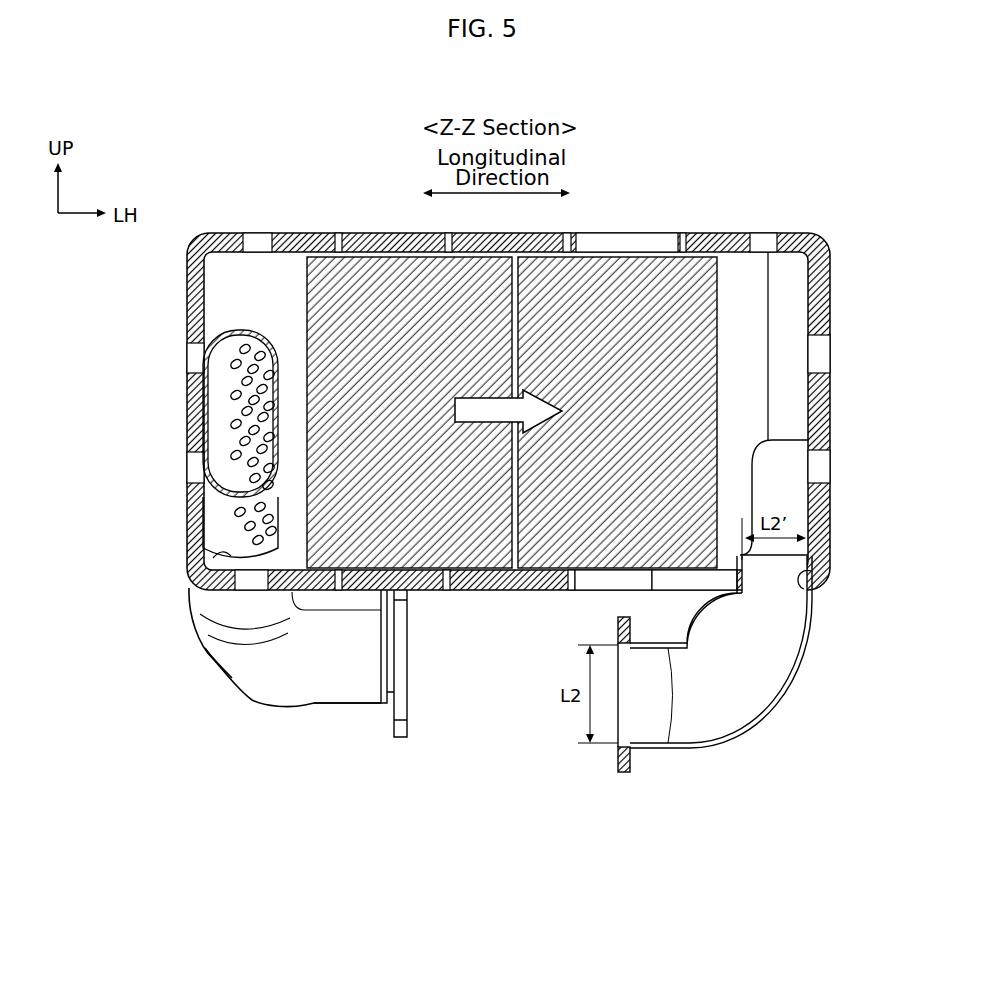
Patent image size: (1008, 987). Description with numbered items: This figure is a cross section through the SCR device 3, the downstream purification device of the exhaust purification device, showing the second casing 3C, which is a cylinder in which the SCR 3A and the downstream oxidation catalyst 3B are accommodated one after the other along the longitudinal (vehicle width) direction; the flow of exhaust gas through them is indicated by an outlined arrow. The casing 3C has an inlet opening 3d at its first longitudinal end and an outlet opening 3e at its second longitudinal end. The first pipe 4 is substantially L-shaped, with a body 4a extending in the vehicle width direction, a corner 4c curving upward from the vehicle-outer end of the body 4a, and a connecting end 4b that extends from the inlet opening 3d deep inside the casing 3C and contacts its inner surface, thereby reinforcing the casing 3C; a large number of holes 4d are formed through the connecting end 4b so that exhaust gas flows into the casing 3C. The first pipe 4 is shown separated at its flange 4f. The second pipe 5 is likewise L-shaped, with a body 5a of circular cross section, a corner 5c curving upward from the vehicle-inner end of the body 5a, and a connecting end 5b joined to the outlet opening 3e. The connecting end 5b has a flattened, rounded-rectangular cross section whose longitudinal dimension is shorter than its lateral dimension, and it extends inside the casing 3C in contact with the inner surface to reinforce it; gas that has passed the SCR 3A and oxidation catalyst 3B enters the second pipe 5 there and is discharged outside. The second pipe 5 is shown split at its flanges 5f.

The SCR device 3 is at (240, 208).
The SCR 3A is at (368, 260).
The downstream oxidation catalyst 3B is at (609, 258).
The second casing 3C is at (728, 233).
The inlet opening 3d is at (225, 553).
The outlet opening 3e is at (806, 590).
The first pipe 4 is at (208, 664).
The body 4a is at (321, 704).
The connecting end 4b is at (213, 398).
The corner 4c is at (236, 666).
The holes 4d is at (242, 438).
The flange 4f is at (402, 738).
The second pipe 5 is at (745, 629).
The body 5a is at (658, 747).
The connecting end 5b is at (800, 490).
The corner 5c is at (797, 685).
The flanges 5f is at (622, 774).